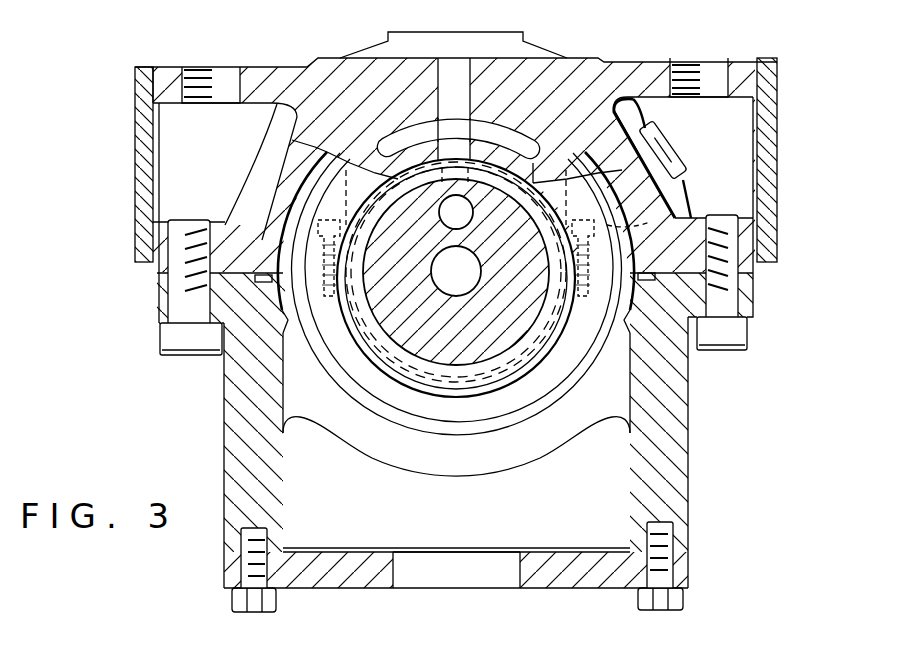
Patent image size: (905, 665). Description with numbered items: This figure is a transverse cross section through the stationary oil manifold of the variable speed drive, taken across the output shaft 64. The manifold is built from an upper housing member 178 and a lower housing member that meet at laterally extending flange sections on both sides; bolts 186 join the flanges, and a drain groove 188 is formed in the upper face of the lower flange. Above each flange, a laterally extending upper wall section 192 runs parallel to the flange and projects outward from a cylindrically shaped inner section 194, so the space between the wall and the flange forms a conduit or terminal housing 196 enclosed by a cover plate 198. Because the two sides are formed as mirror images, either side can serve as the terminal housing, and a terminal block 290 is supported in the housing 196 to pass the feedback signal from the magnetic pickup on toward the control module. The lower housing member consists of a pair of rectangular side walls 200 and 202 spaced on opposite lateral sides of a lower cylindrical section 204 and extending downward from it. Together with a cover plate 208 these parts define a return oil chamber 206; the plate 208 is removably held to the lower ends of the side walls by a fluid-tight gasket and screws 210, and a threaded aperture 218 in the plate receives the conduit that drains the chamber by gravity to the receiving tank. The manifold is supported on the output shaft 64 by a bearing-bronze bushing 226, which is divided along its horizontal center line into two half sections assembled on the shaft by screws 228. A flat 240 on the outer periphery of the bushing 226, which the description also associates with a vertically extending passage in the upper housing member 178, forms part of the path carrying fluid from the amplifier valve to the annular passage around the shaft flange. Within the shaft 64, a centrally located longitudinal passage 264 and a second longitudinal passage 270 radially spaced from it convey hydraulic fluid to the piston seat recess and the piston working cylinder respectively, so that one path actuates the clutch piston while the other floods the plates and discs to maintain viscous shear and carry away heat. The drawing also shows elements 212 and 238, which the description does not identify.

The output shaft 64 is at (482, 348).
The upper housing member 178 is at (613, 72).
The bolts 186 is at (165, 345).
The drain groove 188 is at (265, 283).
The upper wall section 192 is at (260, 78).
The cylindrically shaped inner section 194 is at (602, 132).
The terminal housing 196 is at (735, 200).
The cover plate 198 is at (777, 187).
The side wall 200 is at (230, 422).
The side wall 202 is at (688, 482).
The lower cylindrical section 204 is at (362, 438).
The return oil chamber 206 is at (578, 536).
The cover plate 208 is at (327, 577).
The screws 210 is at (230, 607).
The gasket 212 is at (230, 552).
The threaded aperture 218 is at (403, 577).
The bushing 226 is at (414, 142).
The screws 228 is at (647, 273).
The inlet slot 238 is at (464, 72).
The flat 240 is at (498, 133).
The passage 264 is at (481, 270).
The passage 270 is at (471, 214).
The terminal block 290 is at (675, 153).